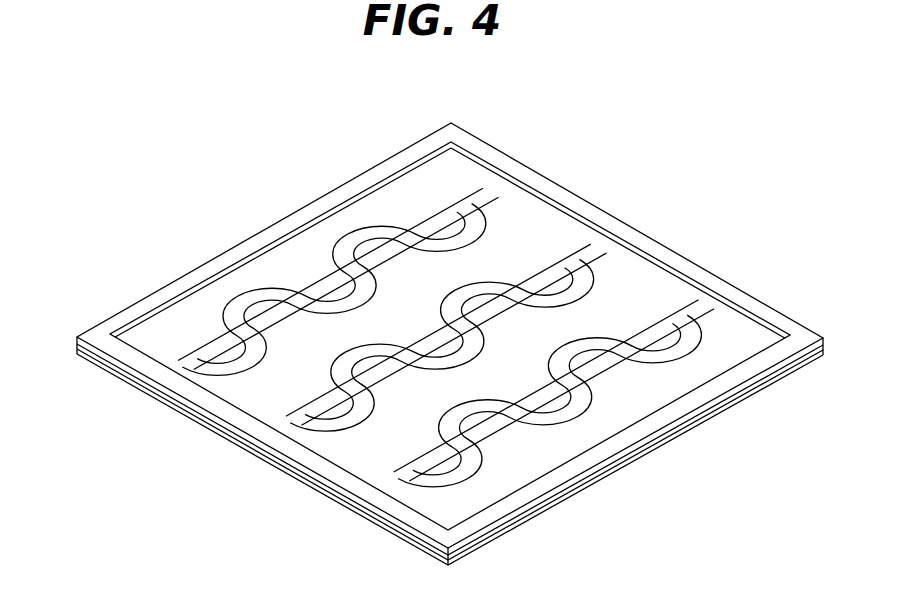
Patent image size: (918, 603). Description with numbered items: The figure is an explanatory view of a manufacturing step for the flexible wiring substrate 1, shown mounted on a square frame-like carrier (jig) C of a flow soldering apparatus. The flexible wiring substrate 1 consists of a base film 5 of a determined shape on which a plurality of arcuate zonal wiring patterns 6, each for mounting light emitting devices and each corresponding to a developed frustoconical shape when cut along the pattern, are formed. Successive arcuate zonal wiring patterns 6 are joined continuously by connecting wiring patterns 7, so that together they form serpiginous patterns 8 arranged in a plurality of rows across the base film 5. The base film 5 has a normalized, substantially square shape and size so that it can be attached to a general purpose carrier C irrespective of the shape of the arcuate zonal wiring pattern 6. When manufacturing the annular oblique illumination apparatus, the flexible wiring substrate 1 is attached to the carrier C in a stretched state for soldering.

The flexible wiring substrate 1 is at (490, 492).
The base film 5 is at (407, 190).
The arcuate zonal wiring pattern 6 is at (350, 227).
The connecting wiring pattern 7 is at (243, 327).
The serpiginous pattern 8 is at (537, 190).
The carrier (jig) C is at (705, 393).